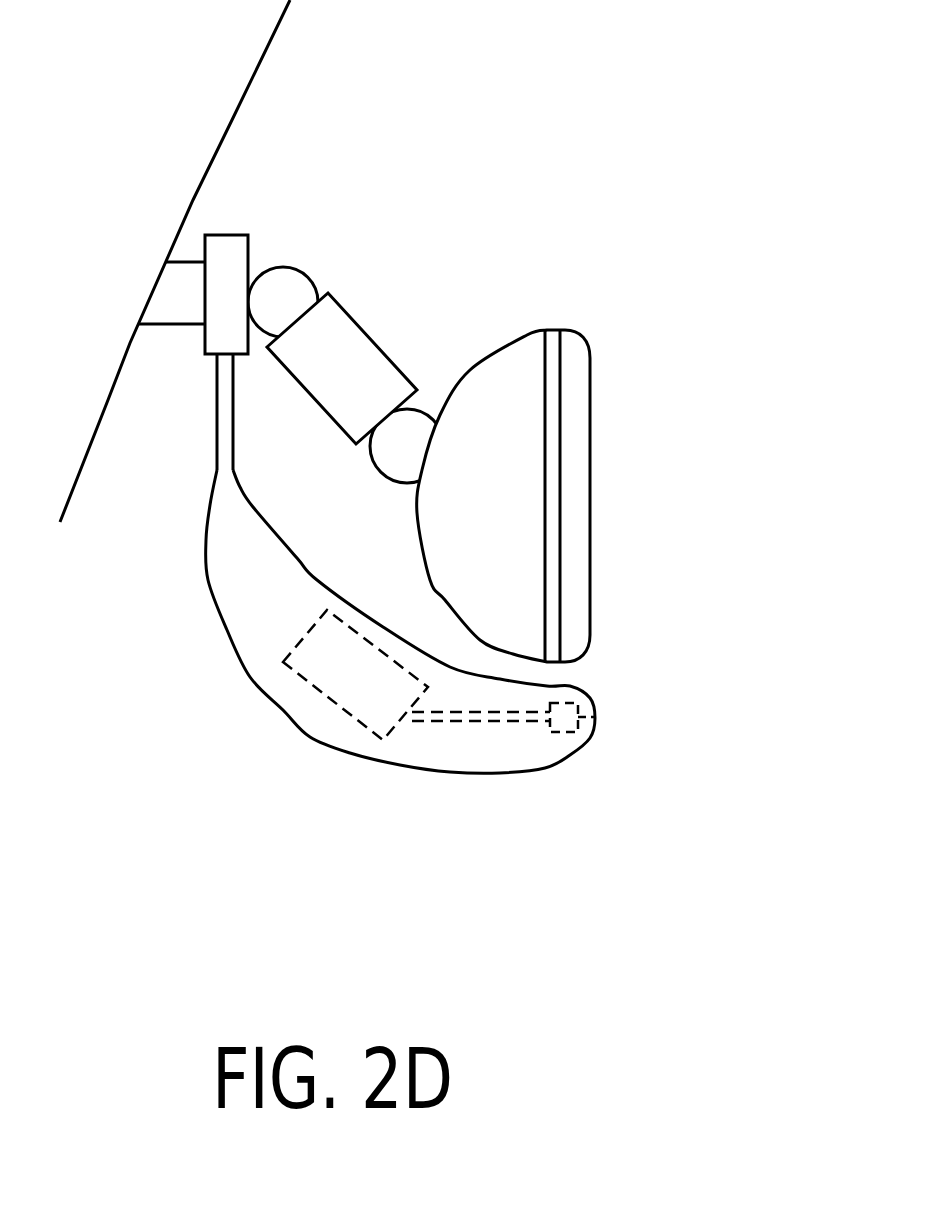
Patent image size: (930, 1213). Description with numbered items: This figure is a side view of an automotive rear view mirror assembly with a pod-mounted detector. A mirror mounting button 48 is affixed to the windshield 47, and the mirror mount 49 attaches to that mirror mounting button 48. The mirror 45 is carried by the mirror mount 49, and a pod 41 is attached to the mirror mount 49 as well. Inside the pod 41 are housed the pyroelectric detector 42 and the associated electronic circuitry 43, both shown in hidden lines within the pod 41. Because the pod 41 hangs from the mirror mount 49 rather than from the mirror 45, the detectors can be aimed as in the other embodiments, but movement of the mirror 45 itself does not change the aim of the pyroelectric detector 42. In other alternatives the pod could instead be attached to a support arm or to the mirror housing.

The pod 41 is at (252, 681).
The pyroelectric detector 42 is at (596, 718).
The electronic circuitry 43 is at (333, 703).
The mirror 45 is at (491, 380).
The windshield 47 is at (272, 35).
The mirror mounting button 48 is at (195, 262).
The mirror mount 49 is at (240, 237).